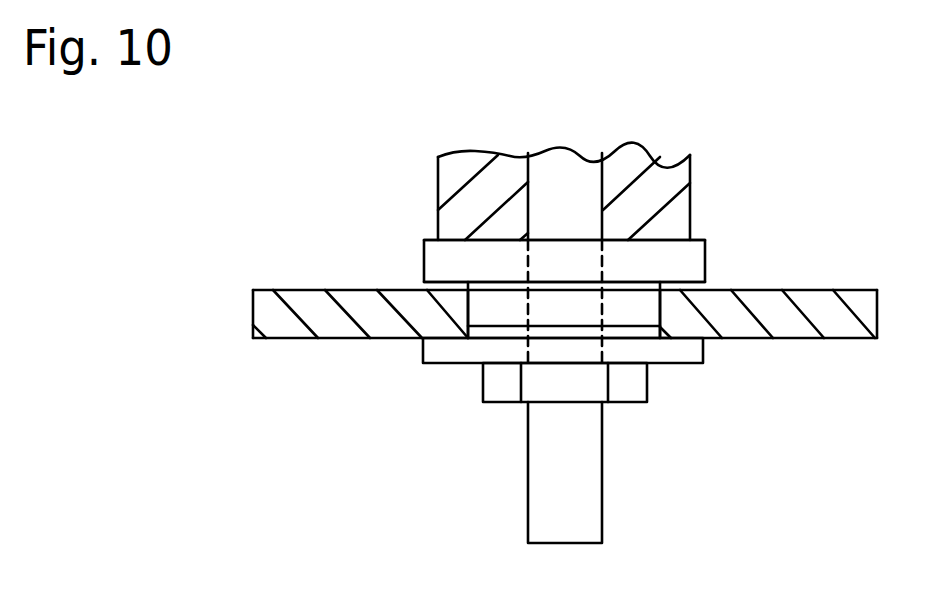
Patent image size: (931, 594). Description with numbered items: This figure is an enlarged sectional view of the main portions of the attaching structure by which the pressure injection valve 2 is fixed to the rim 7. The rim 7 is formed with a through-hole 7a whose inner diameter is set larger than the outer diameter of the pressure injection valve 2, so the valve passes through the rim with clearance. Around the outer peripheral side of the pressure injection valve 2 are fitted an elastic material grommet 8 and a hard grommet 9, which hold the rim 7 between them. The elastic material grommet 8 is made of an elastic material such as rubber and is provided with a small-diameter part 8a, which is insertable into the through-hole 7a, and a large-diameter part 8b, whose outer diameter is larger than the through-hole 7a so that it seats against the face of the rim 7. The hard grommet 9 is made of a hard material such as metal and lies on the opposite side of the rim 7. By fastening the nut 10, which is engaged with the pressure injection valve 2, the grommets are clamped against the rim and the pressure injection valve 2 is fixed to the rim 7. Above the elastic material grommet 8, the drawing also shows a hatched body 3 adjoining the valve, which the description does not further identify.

The pressure injection valve 2 is at (590, 497).
The housing block 3 is at (675, 183).
The rim 7 is at (822, 305).
The through-hole 7a is at (470, 303).
The elastic material grommet 8 is at (709, 259).
The small-diameter part 8a is at (508, 306).
The large-diameter part 8b is at (440, 260).
The hard grommet 9 is at (683, 353).
The nut 10 is at (628, 392).